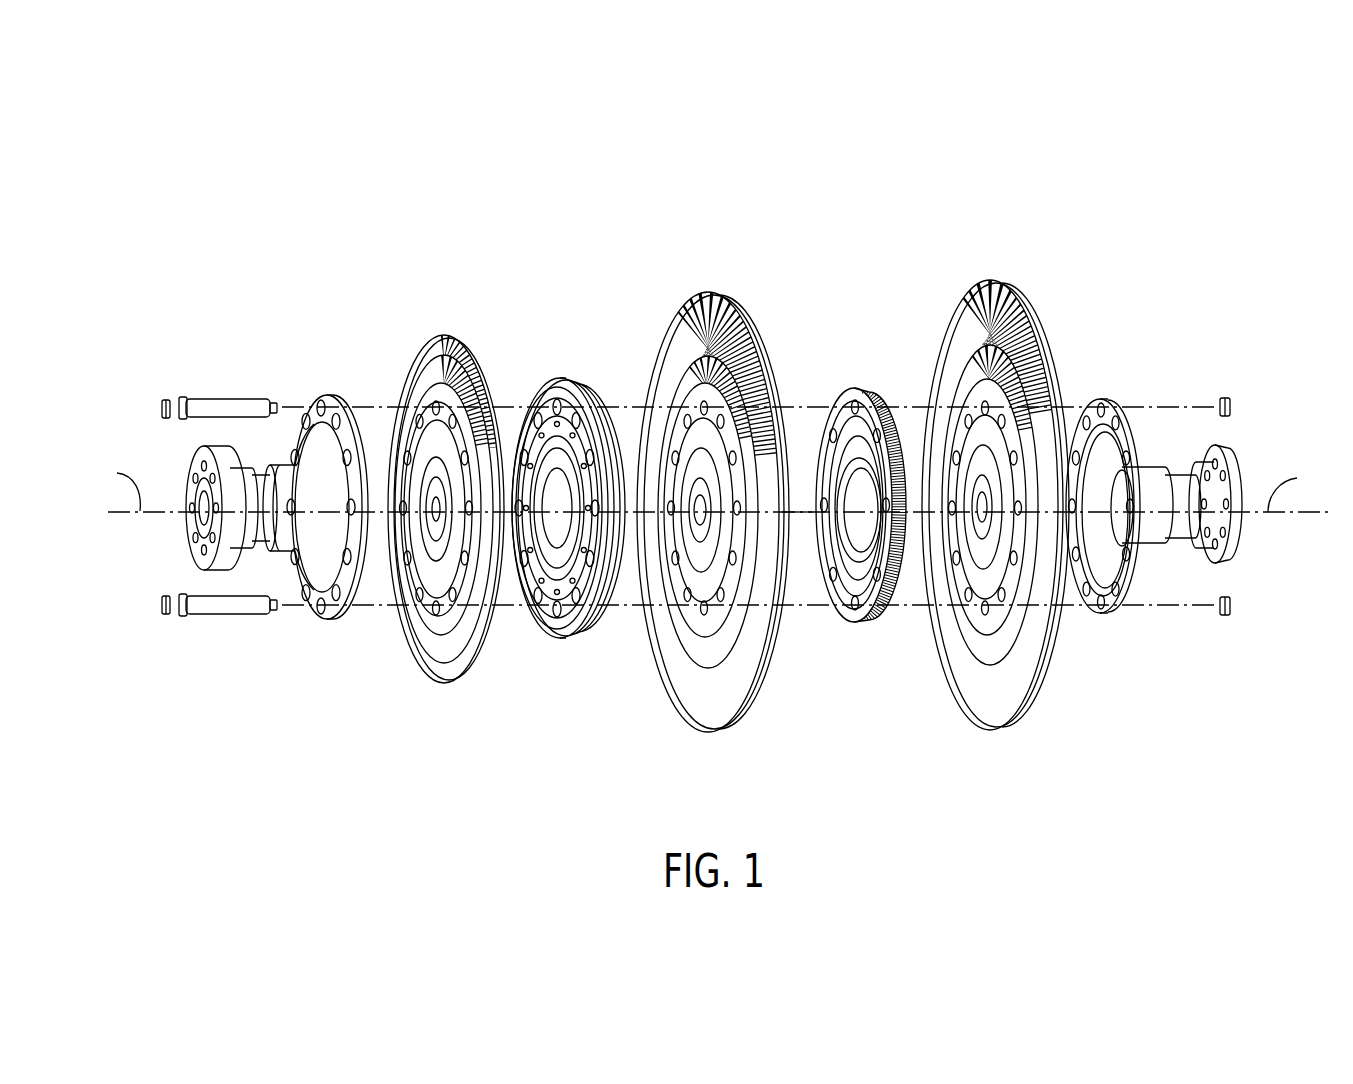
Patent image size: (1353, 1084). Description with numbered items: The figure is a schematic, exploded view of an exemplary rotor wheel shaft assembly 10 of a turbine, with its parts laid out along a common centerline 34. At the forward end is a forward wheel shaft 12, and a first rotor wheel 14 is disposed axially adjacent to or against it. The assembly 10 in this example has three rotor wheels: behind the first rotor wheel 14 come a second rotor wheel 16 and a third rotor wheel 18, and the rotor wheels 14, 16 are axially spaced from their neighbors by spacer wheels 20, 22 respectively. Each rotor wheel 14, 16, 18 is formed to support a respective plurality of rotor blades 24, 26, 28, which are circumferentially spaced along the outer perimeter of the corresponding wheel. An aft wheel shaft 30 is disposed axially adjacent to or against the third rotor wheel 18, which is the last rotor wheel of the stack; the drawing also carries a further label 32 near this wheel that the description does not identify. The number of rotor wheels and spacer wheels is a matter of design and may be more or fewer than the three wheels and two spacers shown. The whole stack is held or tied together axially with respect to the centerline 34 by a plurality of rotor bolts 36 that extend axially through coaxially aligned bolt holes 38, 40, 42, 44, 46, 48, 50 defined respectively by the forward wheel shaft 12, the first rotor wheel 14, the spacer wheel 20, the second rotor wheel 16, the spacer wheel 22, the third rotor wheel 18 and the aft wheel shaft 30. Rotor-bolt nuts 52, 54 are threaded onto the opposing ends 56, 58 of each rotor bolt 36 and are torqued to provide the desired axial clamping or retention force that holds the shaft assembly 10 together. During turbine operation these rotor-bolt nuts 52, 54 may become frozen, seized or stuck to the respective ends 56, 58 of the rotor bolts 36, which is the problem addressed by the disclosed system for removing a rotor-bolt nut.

The rotor wheel shaft assembly 10 is at (878, 184).
The forward wheel shaft 12 is at (190, 568).
The first rotor wheel 14 is at (434, 690).
The second rotor wheel 16 is at (698, 744).
The third rotor wheel 18 is at (980, 740).
The spacer wheel 20 is at (571, 662).
The spacer wheel 22 is at (871, 630).
The rotor blades 24 is at (466, 333).
The rotor blades 26 is at (727, 290).
The rotor blades 28 is at (1028, 287).
The aft wheel shaft 30 is at (1172, 565).
The disc rim 32 is at (1020, 733).
The centerline 34 is at (797, 514).
The rotor bolts 36 is at (232, 399).
The bolt holes 38 is at (313, 397).
The bolt holes 40 is at (430, 406).
The bolt holes 42 is at (553, 409).
The bolt holes 44 is at (698, 408).
The bolt holes 46 is at (852, 405).
The bolt holes 48 is at (983, 408).
The bolt holes 50 is at (1098, 400).
The rotor-bolt nut 52 is at (160, 403).
The rotor-bolt nut 54 is at (1232, 405).
The end of rotor bolt 56 is at (182, 395).
The end of rotor bolt 58 is at (284, 398).